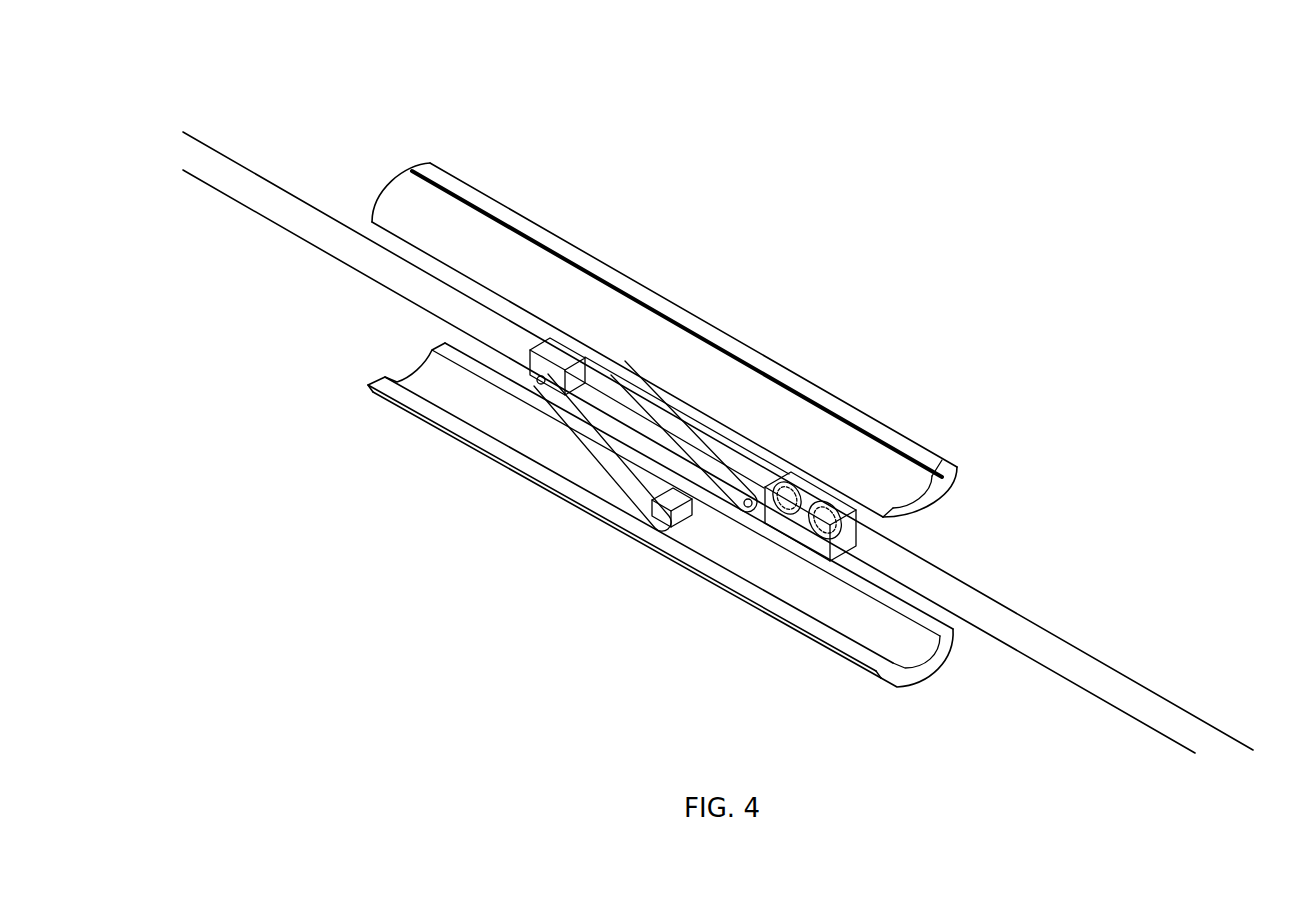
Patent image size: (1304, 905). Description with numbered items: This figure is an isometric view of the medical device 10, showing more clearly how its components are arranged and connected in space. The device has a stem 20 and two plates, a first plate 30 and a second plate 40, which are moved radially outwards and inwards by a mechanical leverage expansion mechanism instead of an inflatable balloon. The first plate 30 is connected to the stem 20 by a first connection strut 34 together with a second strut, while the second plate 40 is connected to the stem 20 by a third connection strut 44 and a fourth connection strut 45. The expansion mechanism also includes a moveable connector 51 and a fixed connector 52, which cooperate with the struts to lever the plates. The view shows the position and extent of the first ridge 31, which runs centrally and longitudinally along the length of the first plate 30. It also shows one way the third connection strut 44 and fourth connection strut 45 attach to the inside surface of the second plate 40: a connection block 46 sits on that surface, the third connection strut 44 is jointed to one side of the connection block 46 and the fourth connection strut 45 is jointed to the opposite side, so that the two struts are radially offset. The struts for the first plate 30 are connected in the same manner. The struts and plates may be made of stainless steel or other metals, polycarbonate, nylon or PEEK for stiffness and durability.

The medical device 10 is at (973, 507).
The stem 20 is at (405, 305).
The first plate 30 is at (875, 418).
The first ridge 31 is at (657, 307).
The first connection strut 34 is at (722, 428).
The second plate 40 is at (585, 513).
The third connection strut 44 is at (727, 508).
The fourth connection strut 45 is at (548, 432).
The connection block 46 is at (662, 512).
The moveable connector 51 is at (547, 350).
The fixed connector 52 is at (783, 478).